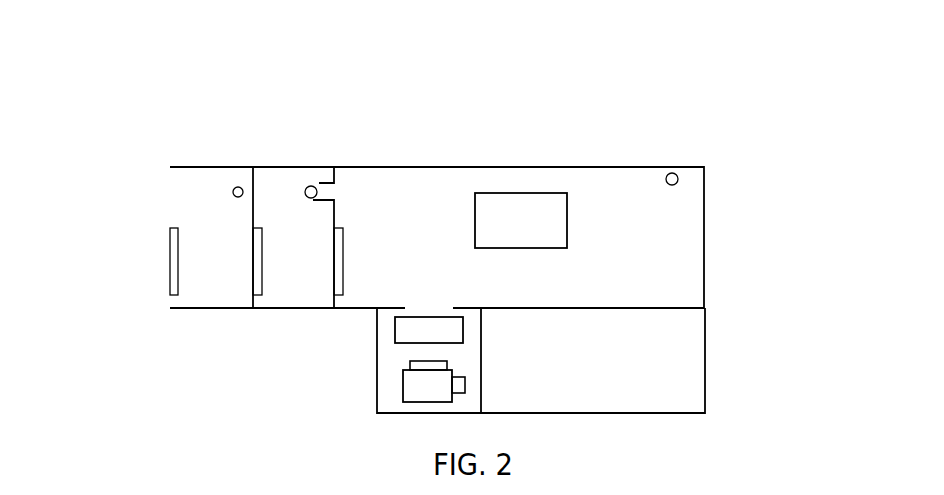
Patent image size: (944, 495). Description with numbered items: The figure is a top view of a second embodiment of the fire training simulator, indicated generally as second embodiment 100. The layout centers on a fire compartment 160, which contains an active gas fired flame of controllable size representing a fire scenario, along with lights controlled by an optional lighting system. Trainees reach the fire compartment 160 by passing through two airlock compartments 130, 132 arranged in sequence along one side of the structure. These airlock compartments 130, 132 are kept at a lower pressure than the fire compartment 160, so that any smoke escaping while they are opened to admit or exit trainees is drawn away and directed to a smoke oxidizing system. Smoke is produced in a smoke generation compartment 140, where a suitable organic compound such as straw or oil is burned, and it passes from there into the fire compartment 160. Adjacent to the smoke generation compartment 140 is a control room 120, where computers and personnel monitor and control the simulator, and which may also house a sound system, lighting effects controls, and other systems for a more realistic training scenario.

The second embodiment 100 is at (194, 108).
The control room 120 is at (670, 372).
The airlock compartment 130 is at (190, 256).
The airlock compartment 132 is at (288, 190).
The smoke generation compartment 140 is at (383, 365).
The fire compartment 160 is at (670, 223).